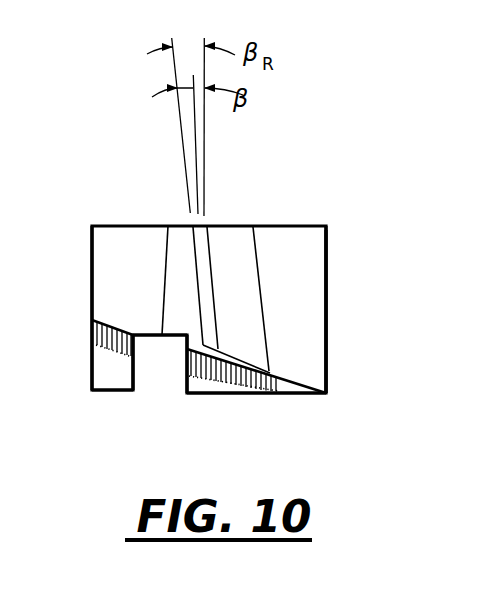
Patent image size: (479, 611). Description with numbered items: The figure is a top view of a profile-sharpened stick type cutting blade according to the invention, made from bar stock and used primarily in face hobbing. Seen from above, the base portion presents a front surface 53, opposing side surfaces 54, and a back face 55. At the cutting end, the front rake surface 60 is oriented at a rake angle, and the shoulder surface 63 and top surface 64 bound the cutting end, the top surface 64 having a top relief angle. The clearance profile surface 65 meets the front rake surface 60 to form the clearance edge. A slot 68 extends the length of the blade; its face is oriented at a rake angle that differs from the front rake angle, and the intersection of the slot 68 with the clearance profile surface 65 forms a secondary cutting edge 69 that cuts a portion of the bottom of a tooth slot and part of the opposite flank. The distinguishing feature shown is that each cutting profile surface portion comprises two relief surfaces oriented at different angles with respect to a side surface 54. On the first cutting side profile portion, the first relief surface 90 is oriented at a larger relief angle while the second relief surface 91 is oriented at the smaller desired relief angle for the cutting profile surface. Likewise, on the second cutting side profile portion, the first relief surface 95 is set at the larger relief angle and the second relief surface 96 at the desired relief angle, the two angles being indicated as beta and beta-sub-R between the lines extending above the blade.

The front surface 53 is at (108, 393).
The side surfaces 54 is at (92, 296).
The back face 55 is at (307, 228).
The front rake surface 60 is at (104, 340).
The shoulder surface 63 is at (303, 268).
The top surface 64 is at (177, 238).
The clearance profile surface 65 is at (142, 280).
The slot 68 is at (168, 377).
The secondary cutting edge 69 is at (158, 337).
The first relief surface 90 is at (203, 245).
The second relief surface 91 is at (215, 372).
The first relief surface 95 is at (237, 245).
The second relief surface 96 is at (238, 382).